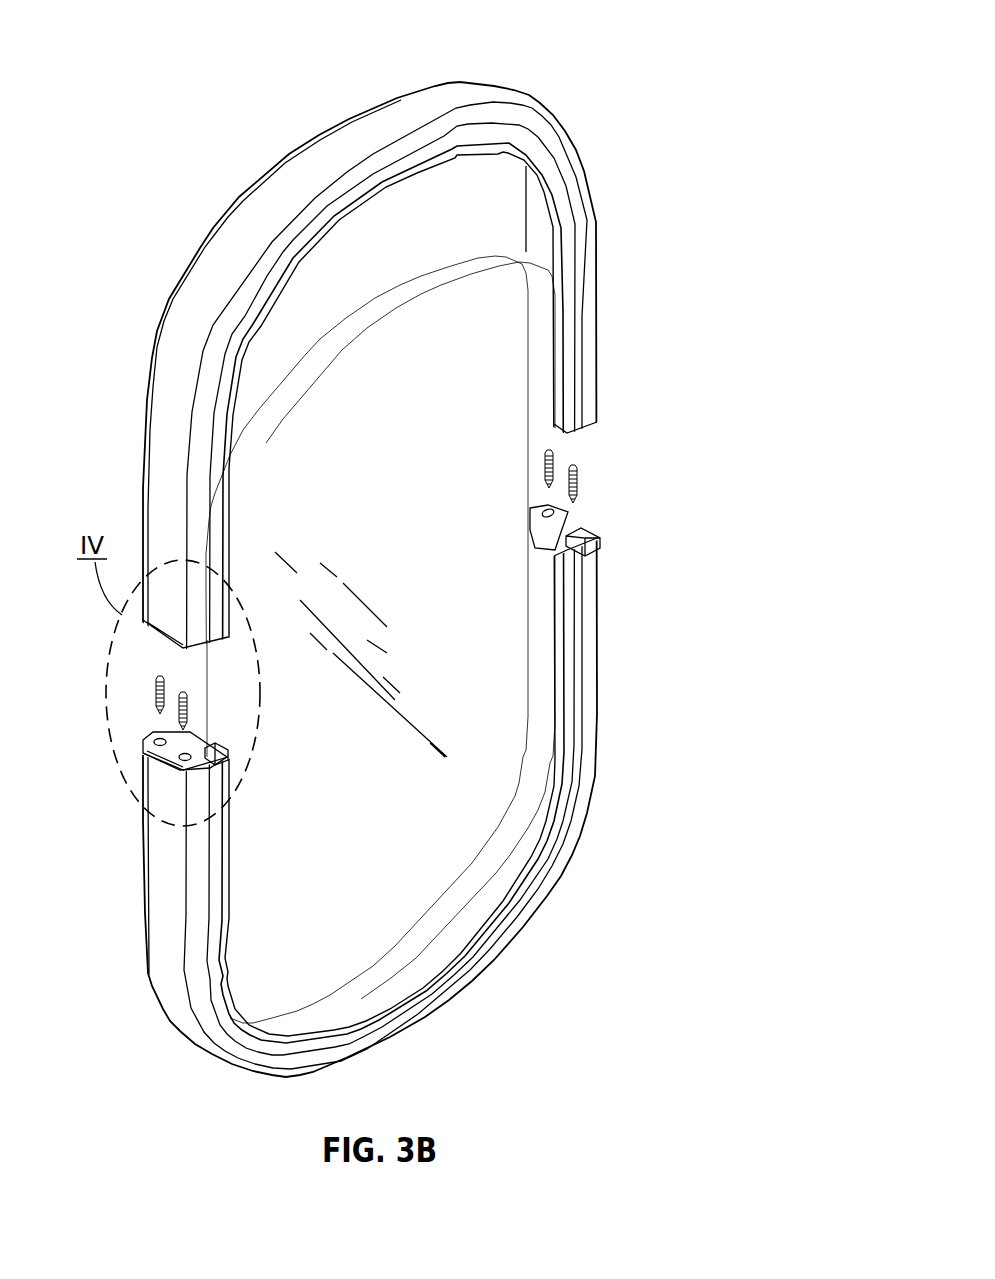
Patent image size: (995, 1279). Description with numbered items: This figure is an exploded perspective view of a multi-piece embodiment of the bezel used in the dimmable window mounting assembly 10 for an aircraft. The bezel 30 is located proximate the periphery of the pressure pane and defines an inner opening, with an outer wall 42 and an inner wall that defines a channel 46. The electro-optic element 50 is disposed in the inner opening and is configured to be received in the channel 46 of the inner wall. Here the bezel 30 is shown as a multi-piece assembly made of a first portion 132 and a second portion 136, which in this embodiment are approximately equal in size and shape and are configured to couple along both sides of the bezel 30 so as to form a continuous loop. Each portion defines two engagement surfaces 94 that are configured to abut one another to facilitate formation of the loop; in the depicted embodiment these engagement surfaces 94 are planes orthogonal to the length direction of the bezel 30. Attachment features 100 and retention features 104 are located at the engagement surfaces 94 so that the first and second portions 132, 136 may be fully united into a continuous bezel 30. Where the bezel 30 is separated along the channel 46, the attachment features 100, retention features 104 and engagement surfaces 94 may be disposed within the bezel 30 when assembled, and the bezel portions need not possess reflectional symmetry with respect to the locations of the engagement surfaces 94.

The dimmable window mounting assembly 10 is at (185, 172).
The bezel 30 is at (178, 272).
The outer wall 42 is at (410, 112).
The channel 46 is at (565, 405).
The electro-optic element 50 is at (402, 466).
The engagement surfaces 94 is at (590, 535).
The attachment features 100 is at (548, 450).
The retention features 104 is at (548, 513).
The first portion 132 is at (524, 87).
The second portion 136 is at (578, 852).